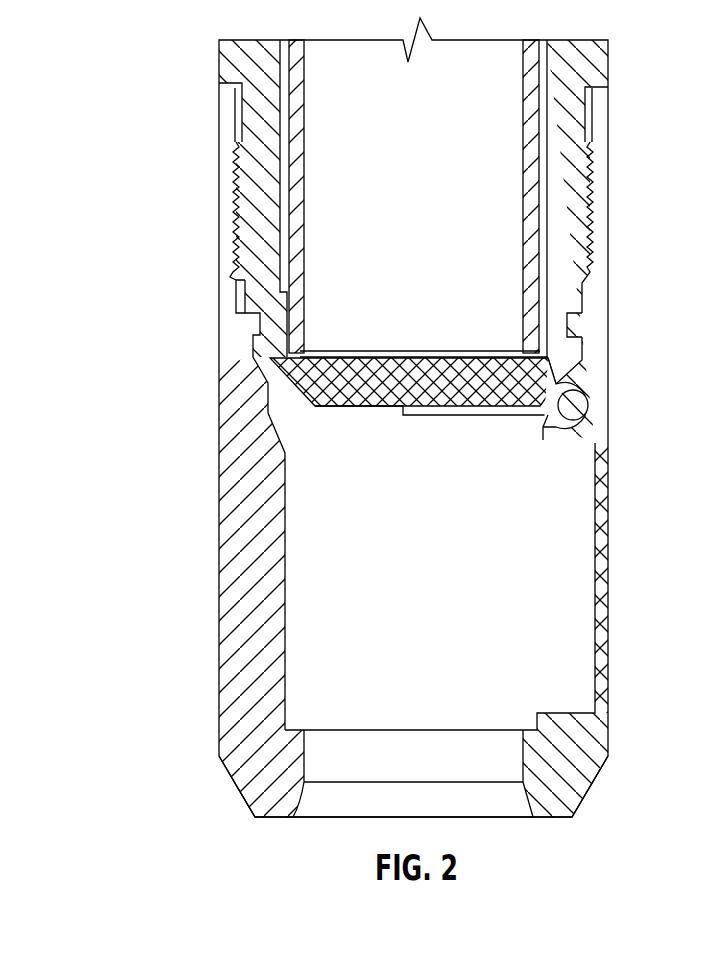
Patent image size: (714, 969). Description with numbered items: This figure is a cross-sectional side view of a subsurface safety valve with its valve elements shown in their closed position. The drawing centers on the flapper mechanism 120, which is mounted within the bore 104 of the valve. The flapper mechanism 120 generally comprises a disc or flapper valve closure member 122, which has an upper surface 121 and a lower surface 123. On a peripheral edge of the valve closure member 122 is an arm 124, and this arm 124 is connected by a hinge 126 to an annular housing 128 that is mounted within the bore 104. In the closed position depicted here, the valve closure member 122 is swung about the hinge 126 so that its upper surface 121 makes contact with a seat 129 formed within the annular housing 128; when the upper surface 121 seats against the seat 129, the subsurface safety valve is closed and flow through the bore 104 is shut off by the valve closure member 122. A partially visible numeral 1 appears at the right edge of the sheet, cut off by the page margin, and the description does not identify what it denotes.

The bore 104 is at (543, 578).
The flapper mechanism 120 is at (197, 271).
The upper surface 121 is at (345, 356).
The valve closure member 122 is at (335, 390).
The lower surface 123 is at (368, 408).
The arm 124 is at (545, 425).
The hinge 126 is at (580, 408).
The annular housing 128 is at (595, 360).
The seat 129 is at (262, 372).
The assembly 1 is at (708, 423).